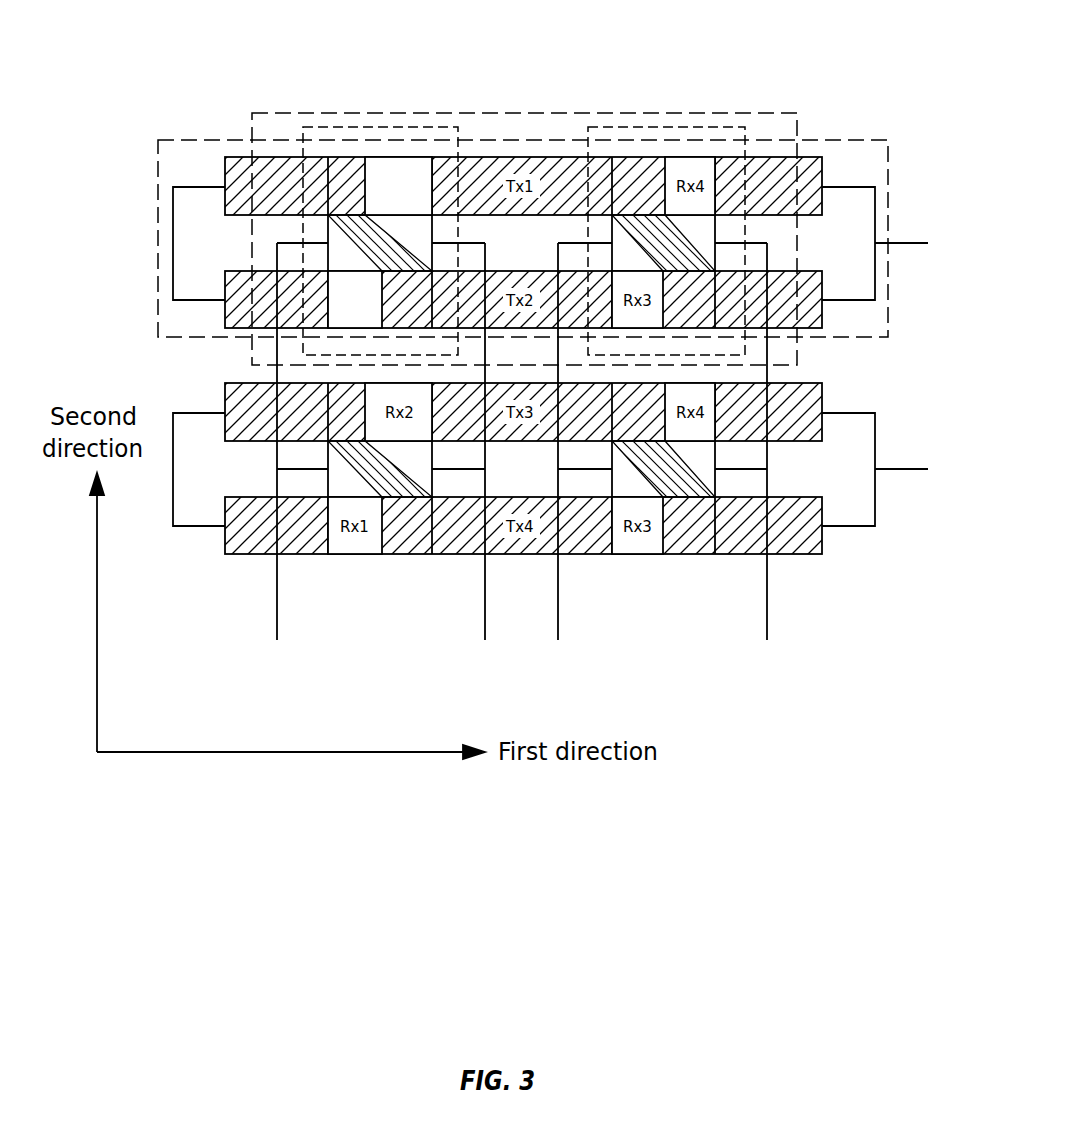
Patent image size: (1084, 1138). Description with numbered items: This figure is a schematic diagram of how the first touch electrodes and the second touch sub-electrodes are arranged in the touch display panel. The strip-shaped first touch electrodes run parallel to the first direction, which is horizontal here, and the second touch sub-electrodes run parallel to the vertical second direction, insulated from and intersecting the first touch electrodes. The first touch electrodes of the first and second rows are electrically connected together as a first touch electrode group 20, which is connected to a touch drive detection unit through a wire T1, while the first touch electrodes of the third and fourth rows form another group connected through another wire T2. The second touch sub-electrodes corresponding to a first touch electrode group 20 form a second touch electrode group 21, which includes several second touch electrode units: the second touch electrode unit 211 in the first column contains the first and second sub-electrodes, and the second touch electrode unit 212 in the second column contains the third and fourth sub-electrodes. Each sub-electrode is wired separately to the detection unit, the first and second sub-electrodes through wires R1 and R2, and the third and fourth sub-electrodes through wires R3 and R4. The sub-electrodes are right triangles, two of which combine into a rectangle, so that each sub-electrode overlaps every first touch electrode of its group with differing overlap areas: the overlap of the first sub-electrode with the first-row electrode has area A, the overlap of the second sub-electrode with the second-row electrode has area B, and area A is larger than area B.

The first touch electrode group 20 is at (852, 140).
The second touch electrode group 21 is at (522, 113).
The second touch electrode unit 211 is at (348, 127).
The second touch electrode unit 212 is at (665, 127).
The overlapping region area A is at (332, 157).
The overlapping region area B is at (420, 152).
The wire T1 is at (916, 243).
The wire T2 is at (916, 469).
The wire R1 is at (279, 462).
The wire R2 is at (484, 462).
The wire R3 is at (562, 462).
The wire R4 is at (774, 462).